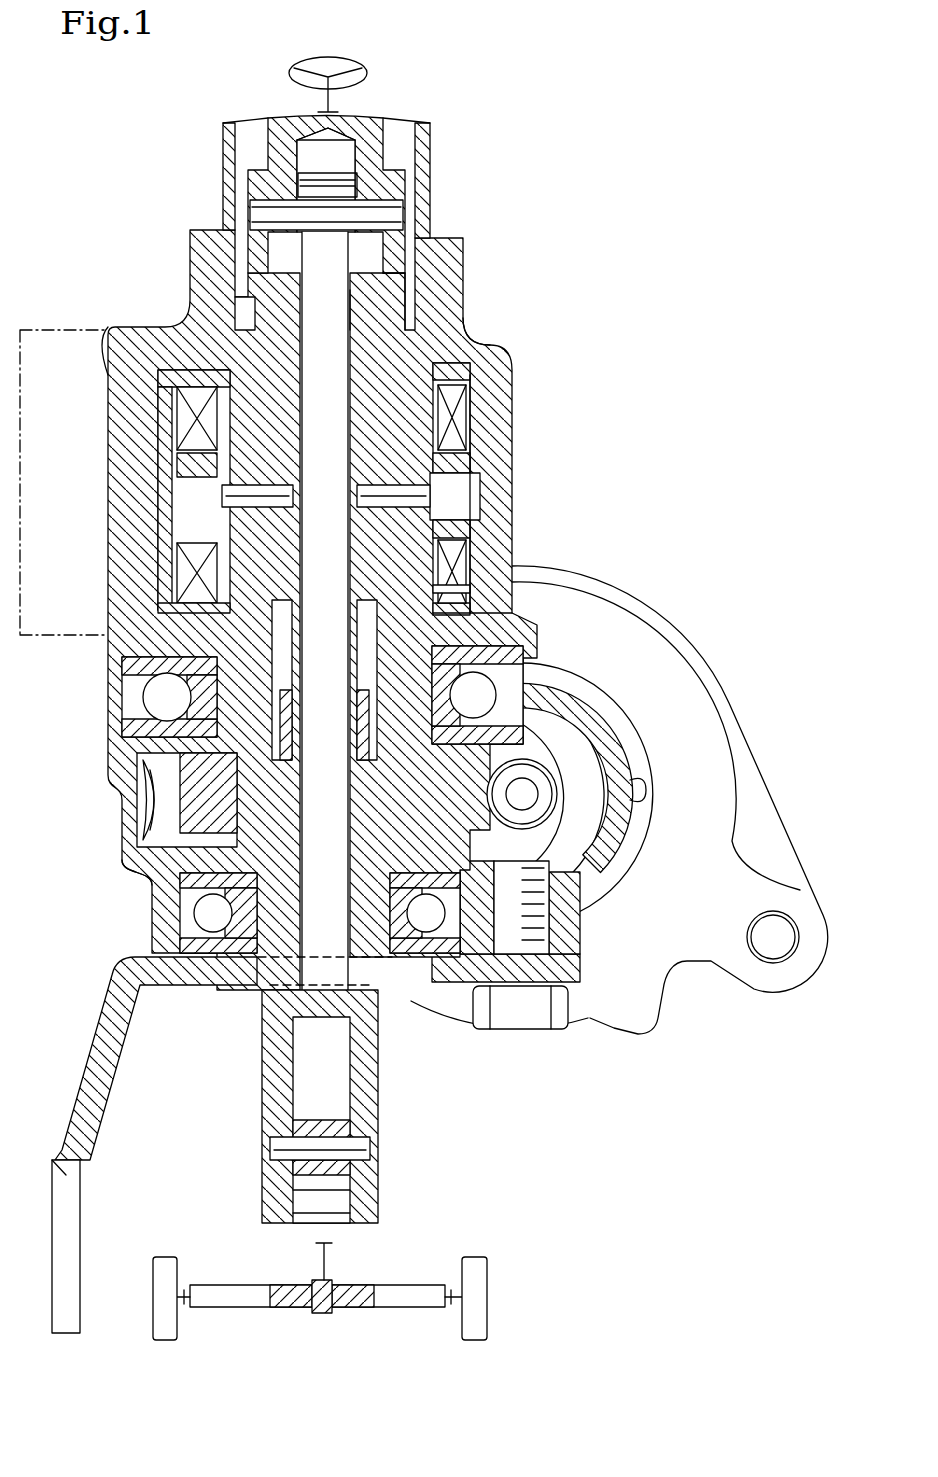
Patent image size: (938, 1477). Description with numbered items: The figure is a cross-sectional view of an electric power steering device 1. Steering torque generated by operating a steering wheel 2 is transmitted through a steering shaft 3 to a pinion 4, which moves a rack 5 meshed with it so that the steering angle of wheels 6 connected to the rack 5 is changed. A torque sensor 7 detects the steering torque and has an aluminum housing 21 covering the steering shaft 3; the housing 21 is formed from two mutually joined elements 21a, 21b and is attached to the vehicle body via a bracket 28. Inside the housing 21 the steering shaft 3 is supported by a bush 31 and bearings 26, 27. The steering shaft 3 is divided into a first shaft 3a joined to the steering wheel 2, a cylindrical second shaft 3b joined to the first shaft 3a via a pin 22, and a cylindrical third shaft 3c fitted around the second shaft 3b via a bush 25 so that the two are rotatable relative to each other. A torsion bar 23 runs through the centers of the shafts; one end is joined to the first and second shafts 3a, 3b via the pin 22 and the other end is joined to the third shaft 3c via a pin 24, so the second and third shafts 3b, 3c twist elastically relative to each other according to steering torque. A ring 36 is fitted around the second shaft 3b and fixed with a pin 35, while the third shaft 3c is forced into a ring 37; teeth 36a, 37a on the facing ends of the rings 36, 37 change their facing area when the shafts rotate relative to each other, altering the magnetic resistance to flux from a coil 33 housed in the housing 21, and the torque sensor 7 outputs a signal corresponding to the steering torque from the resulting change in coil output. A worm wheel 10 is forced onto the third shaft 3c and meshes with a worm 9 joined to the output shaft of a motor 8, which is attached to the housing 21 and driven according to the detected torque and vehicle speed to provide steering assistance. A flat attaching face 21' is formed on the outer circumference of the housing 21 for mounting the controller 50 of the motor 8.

The electric power steering device 1 is at (436, 142).
The steering wheel 2 is at (370, 72).
The steering shaft 3 is at (383, 135).
The first shaft 3a is at (367, 182).
The second shaft 3b is at (393, 270).
The third shaft 3c is at (243, 743).
The pinion 4 is at (328, 1288).
The rack 5 is at (297, 1288).
The wheels 6 is at (480, 1270).
The torque sensor 7 is at (505, 368).
The motor 8 is at (600, 1000).
The worm 9 is at (570, 775).
The worm wheel 10 is at (148, 793).
The housing 21 is at (332, 610).
The attaching face 21' is at (121, 327).
The housing element 21a is at (500, 382).
The housing element 21b is at (172, 880).
The pin 22 is at (390, 212).
The torsion bar 23 is at (447, 462).
The pin 24 is at (355, 1148).
The bush 25 is at (277, 725).
The bearing 26 is at (172, 684).
The bearing 27 is at (205, 912).
The bracket 28 is at (105, 1075).
The bush 31 is at (245, 318).
The coil 33 is at (468, 572).
The pin 35 is at (368, 497).
The ring 36 is at (456, 498).
The teeth 36a is at (460, 528).
The ring 37 is at (505, 613).
The teeth 37a is at (470, 586).
The controller 50 is at (60, 326).